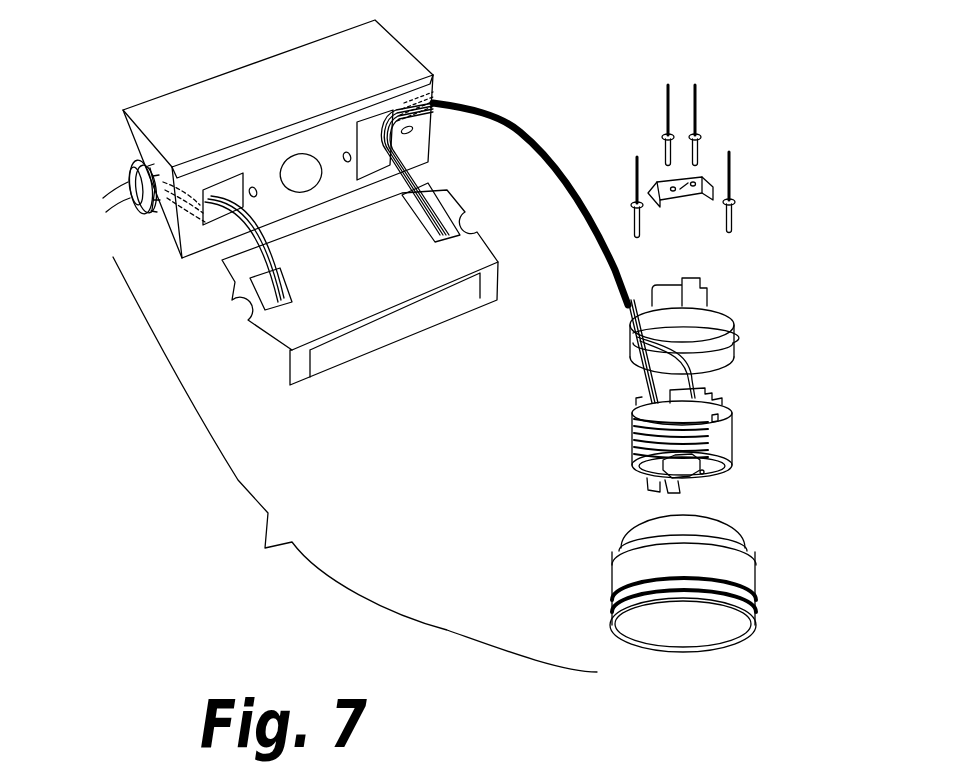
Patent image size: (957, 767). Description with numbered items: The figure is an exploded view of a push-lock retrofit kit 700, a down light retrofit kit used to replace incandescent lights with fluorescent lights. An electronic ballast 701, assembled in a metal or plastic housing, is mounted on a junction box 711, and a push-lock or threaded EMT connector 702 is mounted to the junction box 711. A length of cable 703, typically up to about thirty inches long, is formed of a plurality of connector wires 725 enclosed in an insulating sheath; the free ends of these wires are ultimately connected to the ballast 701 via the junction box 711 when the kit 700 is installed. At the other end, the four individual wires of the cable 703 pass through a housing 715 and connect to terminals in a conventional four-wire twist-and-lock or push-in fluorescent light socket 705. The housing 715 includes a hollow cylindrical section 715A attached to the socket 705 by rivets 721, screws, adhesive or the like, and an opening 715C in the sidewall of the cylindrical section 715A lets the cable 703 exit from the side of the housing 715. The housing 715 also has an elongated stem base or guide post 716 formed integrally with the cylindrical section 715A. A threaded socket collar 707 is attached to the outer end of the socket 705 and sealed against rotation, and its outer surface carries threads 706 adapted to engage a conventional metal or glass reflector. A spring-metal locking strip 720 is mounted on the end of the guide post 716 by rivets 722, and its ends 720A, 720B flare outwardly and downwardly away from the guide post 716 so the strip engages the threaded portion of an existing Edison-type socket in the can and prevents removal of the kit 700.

The push-lock retrofit kit 700 is at (355, 464).
The electronic ballast 701 is at (448, 307).
The EMT connector 702 is at (133, 165).
The cable 703 is at (572, 185).
The socket 705 is at (718, 440).
The threads 706 is at (756, 625).
The threaded socket collar 707 is at (740, 570).
The junction box 711 is at (420, 77).
The housing 715 is at (696, 358).
The hollow cylindrical section 715A is at (703, 342).
The opening 715C is at (632, 338).
The guide post 716 is at (690, 295).
The locking strip 720 is at (713, 165).
The end of locking strip 720A is at (710, 198).
The end of locking strip 720B is at (653, 183).
The rivets 721 is at (732, 210).
The rivets 722 is at (700, 140).
The connector wires 725 is at (648, 382).